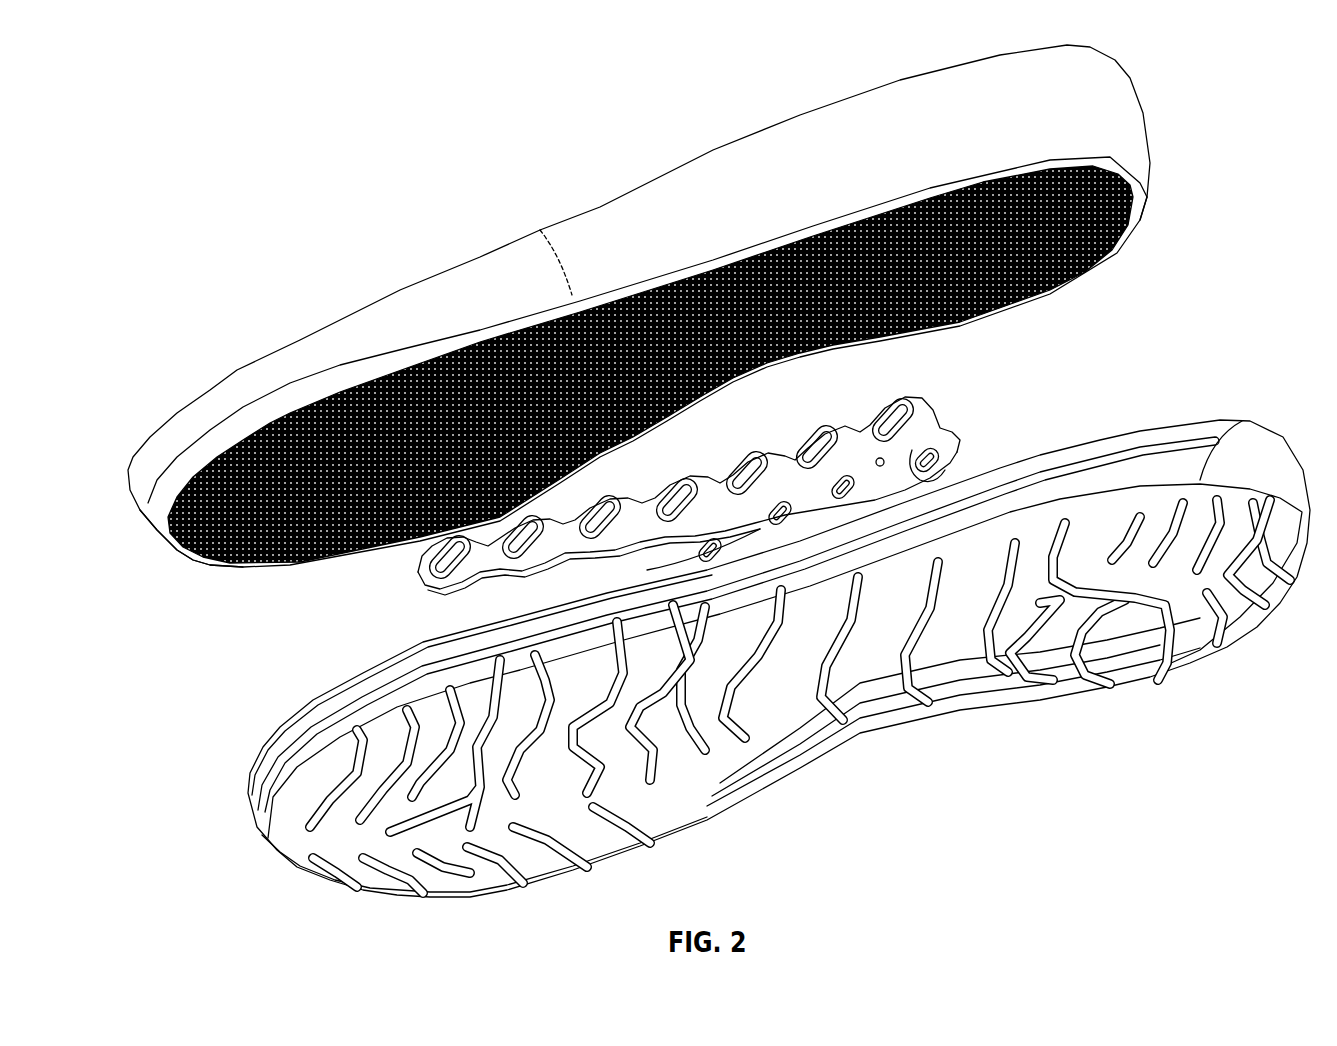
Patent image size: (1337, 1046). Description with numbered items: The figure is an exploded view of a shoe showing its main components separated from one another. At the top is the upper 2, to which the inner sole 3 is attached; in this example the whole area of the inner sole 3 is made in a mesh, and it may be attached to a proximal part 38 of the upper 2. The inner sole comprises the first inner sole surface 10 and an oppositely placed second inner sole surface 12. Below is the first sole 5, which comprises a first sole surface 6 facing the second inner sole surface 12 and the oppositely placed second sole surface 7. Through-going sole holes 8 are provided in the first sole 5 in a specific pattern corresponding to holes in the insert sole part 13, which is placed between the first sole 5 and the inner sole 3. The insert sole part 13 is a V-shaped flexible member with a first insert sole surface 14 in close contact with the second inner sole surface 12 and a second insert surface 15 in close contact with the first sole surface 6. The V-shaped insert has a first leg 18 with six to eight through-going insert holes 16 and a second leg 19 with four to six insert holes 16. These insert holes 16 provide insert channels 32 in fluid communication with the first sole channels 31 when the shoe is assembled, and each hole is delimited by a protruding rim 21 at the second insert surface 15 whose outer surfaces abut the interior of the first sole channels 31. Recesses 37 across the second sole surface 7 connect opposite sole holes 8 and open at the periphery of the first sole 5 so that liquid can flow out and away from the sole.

The upper 2 is at (760, 155).
The inner sole 3 is at (1110, 263).
The first sole 5 is at (1225, 447).
The first sole surface 6 is at (327, 690).
The second sole surface 7 is at (767, 760).
The sole holes 8 is at (940, 700).
The first inner sole surface 10 is at (290, 400).
The second inner sole surface 12 is at (202, 563).
The insert sole part 13 is at (863, 423).
The first insert sole surface 14 is at (730, 453).
The second insert surface 15 is at (857, 463).
The insert holes 16 is at (935, 462).
The first leg 18 is at (420, 565).
The second leg 19 is at (647, 570).
The protruding rim 21 is at (634, 494).
The first sole channels 31 is at (597, 700).
The insert channels 32 is at (770, 447).
The recesses 37 is at (592, 810).
The proximal part 38 is at (1140, 225).